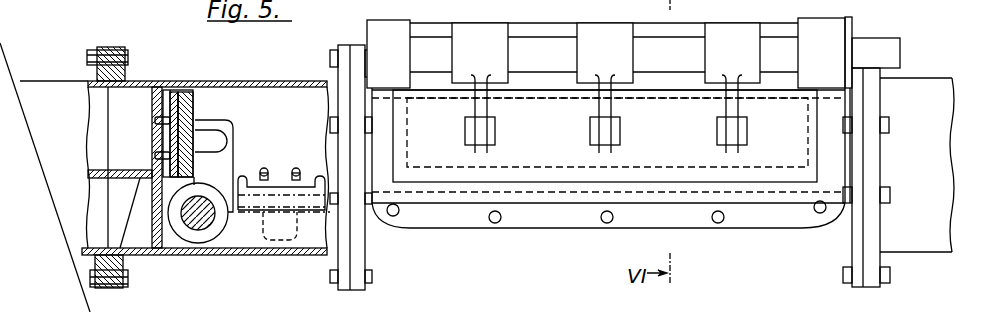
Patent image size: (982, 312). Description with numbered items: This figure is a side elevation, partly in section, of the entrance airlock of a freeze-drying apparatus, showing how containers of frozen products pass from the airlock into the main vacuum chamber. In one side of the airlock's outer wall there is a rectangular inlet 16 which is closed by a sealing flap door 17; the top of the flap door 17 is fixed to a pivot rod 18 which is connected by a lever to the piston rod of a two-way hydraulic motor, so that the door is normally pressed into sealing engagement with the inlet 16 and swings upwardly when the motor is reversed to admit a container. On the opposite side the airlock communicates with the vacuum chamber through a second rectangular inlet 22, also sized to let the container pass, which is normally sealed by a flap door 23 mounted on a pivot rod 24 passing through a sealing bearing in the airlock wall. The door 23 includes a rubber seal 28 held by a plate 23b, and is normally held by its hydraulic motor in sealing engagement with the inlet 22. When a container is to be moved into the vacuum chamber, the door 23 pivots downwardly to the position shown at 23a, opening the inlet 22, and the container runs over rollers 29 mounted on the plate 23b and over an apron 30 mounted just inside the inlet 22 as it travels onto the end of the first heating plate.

The rectangular inlet 16 is at (462, 162).
The sealing flap door 17 is at (588, 160).
The pivot rod 18 is at (551, 47).
The inlet 22 is at (152, 110).
The flap door 23 is at (190, 95).
The downwardly pivoted position of flap door 23a is at (274, 190).
The plate 23b is at (194, 116).
The pivot rod 24 is at (200, 222).
The rubber seal 28 is at (173, 95).
The rollers 29 is at (156, 121).
The apron 30 is at (100, 160).